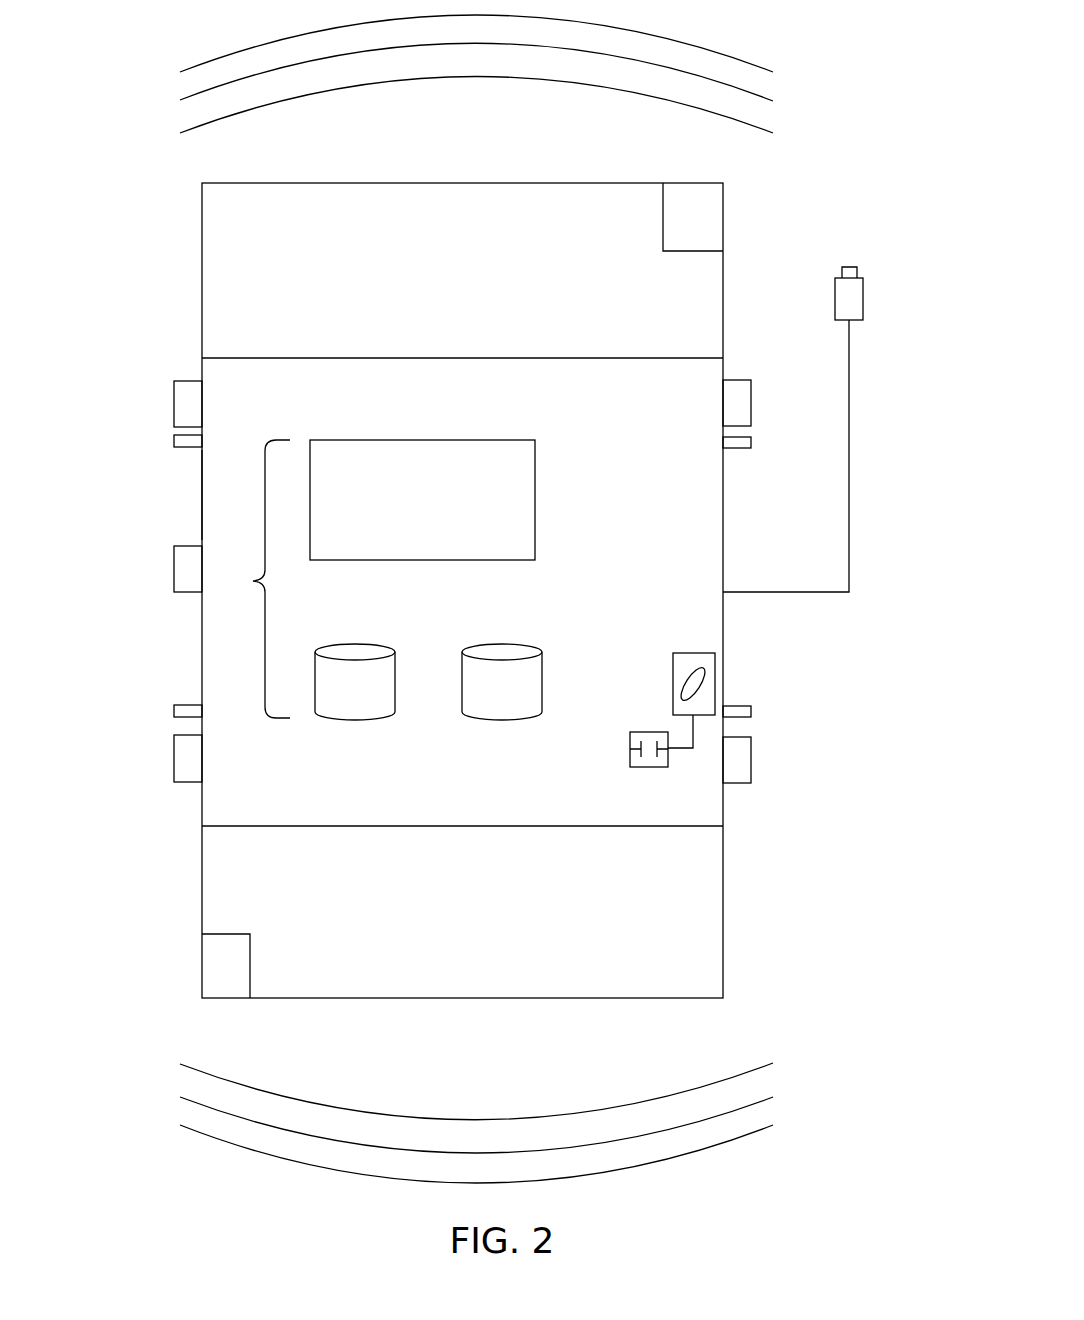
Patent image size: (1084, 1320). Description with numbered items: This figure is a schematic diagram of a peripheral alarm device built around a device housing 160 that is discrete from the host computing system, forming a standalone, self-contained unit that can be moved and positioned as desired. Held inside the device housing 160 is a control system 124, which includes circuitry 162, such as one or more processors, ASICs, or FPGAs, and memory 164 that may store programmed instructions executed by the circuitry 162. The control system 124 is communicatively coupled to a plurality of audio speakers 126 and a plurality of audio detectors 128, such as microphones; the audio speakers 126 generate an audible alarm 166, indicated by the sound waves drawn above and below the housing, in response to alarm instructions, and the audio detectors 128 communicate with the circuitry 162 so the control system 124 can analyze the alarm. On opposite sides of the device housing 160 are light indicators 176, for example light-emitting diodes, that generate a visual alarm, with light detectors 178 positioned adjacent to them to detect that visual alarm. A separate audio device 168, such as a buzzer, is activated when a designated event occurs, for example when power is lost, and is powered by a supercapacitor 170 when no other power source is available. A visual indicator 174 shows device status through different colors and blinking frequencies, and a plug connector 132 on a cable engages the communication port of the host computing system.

The control system 124 is at (253, 581).
The audio speaker 126 is at (463, 194).
The audio detector 128 is at (693, 194).
The plug connector 132 is at (865, 298).
The device housing 160 is at (200, 488).
The circuitry 162 is at (425, 439).
The memory 164 is at (357, 650).
The audible alarm 166 is at (262, 63).
The audio device 168 is at (690, 652).
The supercapacitor 170 is at (648, 731).
The visual indicator 174 is at (173, 571).
The light indicator 176 is at (189, 380).
The light detector 178 is at (173, 441).